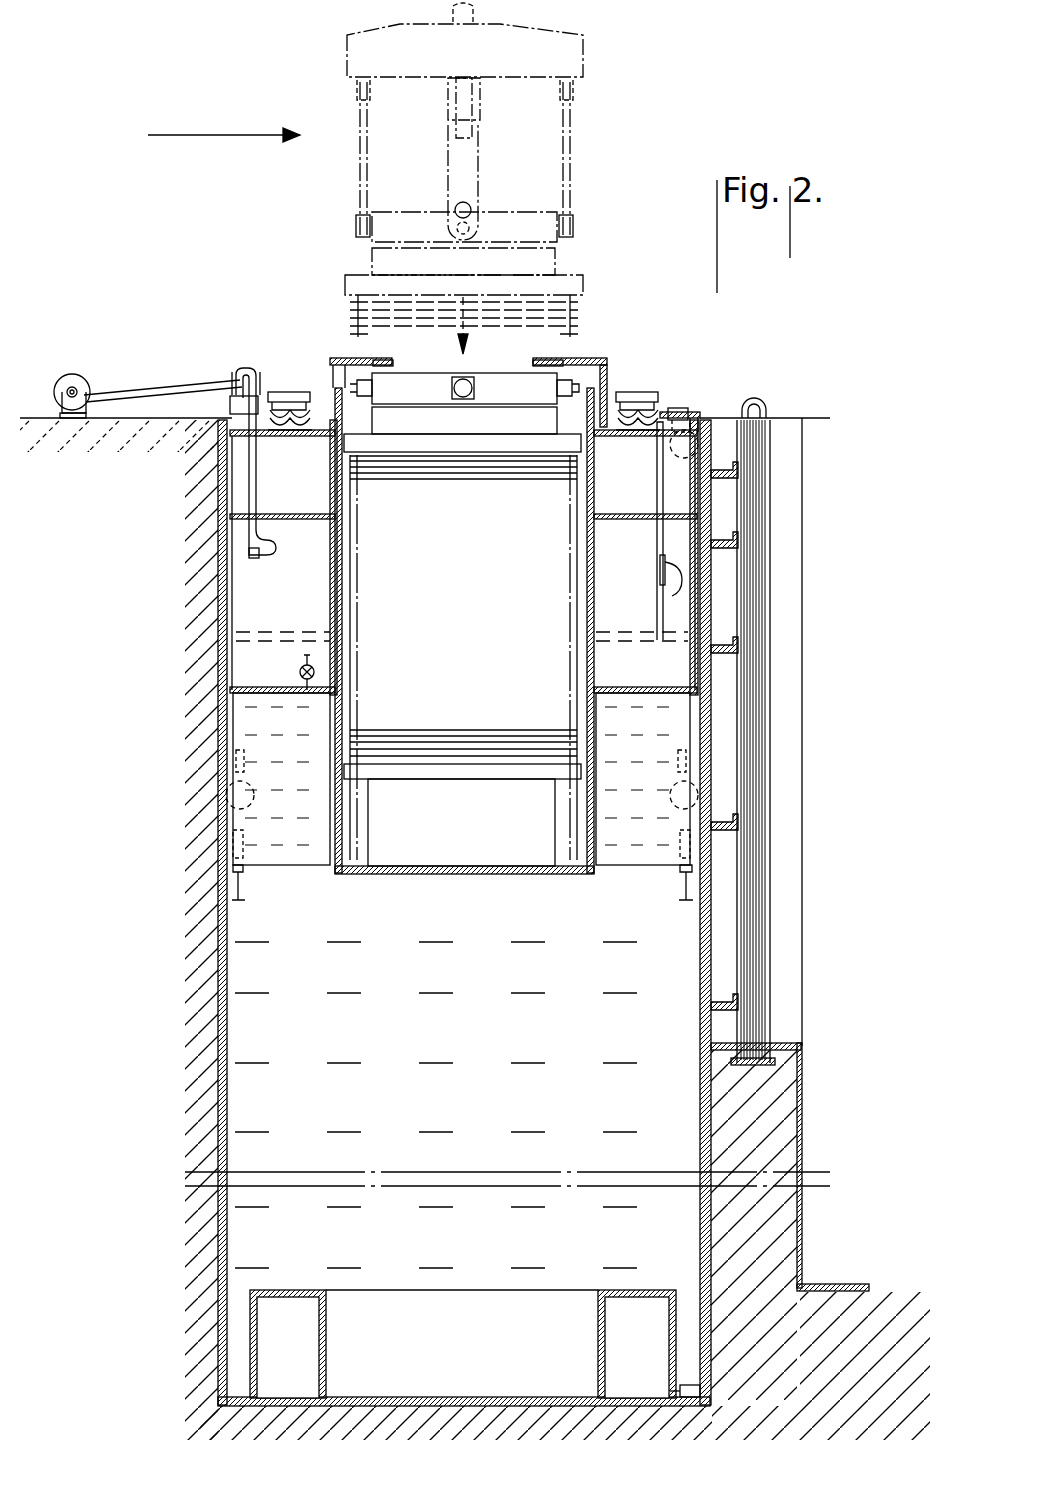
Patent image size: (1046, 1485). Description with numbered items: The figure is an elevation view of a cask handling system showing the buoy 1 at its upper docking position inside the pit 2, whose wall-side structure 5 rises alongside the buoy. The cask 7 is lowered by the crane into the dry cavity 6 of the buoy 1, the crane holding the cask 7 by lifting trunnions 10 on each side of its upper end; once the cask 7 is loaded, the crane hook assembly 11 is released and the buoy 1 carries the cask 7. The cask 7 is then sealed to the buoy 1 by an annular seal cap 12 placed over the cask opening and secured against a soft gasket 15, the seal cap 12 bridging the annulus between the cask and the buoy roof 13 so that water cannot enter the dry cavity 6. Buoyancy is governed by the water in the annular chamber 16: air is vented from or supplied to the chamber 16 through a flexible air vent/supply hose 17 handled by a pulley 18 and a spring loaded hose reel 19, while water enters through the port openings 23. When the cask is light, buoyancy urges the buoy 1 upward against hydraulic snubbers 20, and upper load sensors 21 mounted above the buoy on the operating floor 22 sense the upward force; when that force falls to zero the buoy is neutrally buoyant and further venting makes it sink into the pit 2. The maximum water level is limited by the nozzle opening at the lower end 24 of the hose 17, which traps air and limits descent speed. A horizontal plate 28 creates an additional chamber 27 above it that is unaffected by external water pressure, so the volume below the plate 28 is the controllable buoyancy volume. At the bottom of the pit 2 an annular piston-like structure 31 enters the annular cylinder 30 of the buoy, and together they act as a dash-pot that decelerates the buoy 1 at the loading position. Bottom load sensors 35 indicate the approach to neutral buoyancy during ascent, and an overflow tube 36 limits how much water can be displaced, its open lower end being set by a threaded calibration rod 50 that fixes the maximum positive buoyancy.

The buoy 1 is at (697, 550).
The pit 2 is at (222, 1017).
The ladder 5 is at (757, 748).
The dry cavity 6 is at (338, 372).
The cask 7 is at (368, 592).
The lifting trunnions 10 is at (360, 182).
The crane hook assembly 11 is at (573, 60).
The annular seal cap 12 is at (608, 372).
The buoy roof 13 is at (646, 438).
The soft gasket 15 is at (566, 358).
The annular chamber 16 is at (262, 586).
The air vent/supply hose 17 is at (182, 388).
The pulley 18 is at (250, 374).
The spring loaded hose reel 19 is at (85, 392).
The hydraulic snubbers 20 is at (674, 420).
The upper load sensors 21 is at (696, 414).
The operating floor 22 is at (755, 402).
The port openings 23 is at (236, 668).
The nozzle opening at lower end of air vent/supply hose 24 is at (248, 550).
The additional chamber 27 is at (672, 494).
The horizontal plate 28 is at (642, 516).
The annular cylinder 30 is at (682, 848).
The annular piston-like structure 31 is at (598, 1292).
The bottom load sensors 35 is at (700, 1388).
The overflow tube 36 is at (658, 567).
The threaded calibration rod 50 is at (678, 589).